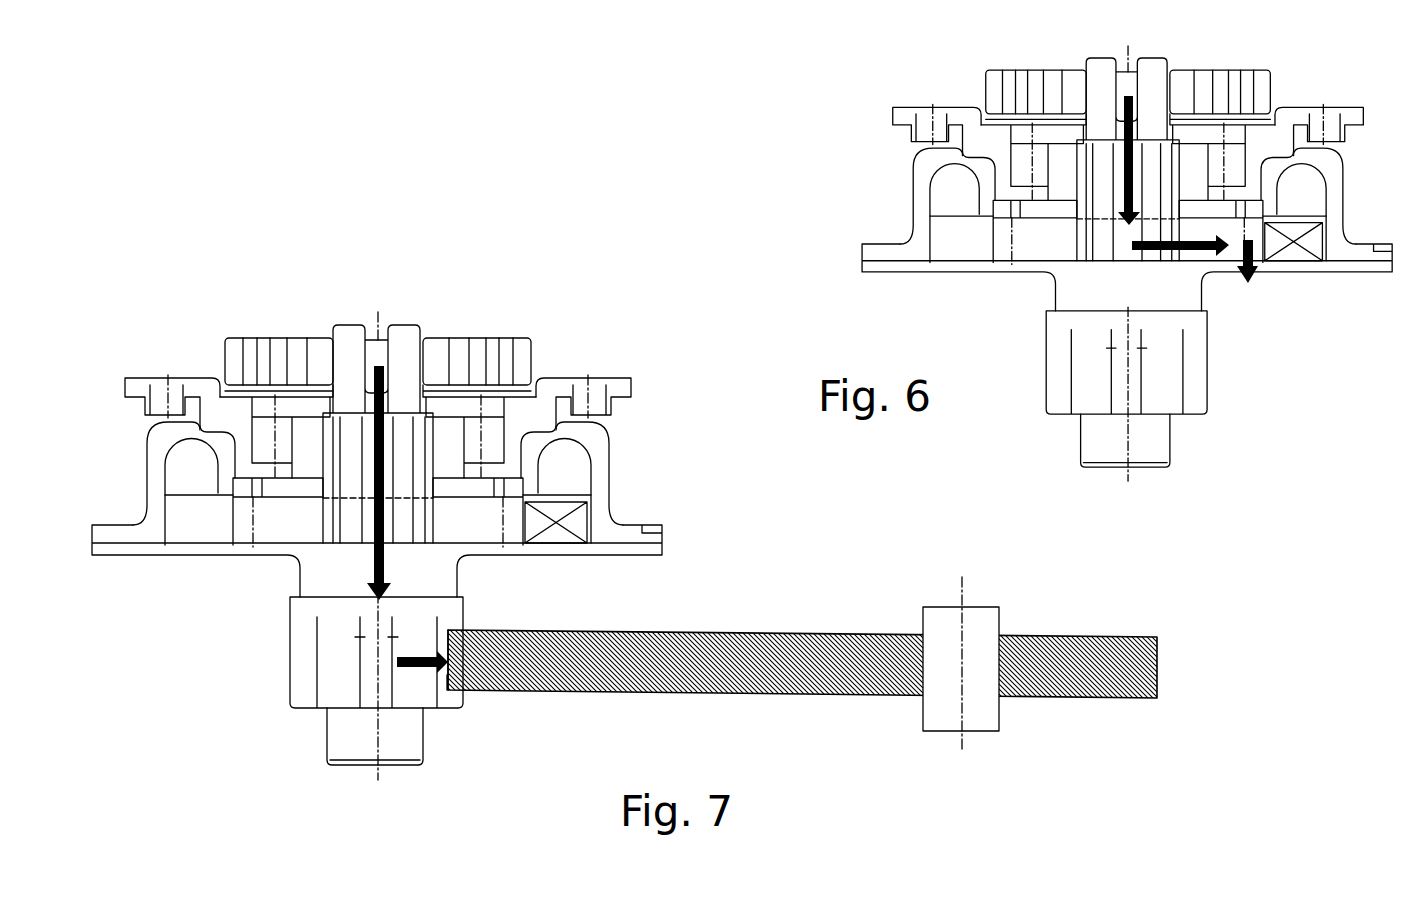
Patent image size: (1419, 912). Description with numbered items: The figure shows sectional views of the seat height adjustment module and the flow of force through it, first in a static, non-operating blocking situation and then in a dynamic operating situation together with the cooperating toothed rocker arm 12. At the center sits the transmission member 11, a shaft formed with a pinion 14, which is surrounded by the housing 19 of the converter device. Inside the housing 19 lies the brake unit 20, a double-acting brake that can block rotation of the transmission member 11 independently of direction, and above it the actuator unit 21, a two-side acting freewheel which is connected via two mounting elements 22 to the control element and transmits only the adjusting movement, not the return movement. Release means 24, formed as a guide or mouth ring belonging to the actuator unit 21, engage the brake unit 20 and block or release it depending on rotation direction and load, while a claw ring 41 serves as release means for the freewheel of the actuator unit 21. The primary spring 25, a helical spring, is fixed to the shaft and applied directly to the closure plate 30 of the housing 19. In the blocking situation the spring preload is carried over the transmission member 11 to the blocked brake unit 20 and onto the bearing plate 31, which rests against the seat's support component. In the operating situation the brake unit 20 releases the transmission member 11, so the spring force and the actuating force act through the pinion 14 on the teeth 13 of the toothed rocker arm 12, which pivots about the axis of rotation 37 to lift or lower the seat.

In FIG. 7, the transmission member 11 is at (340, 770).
In FIG. 6, the transmission member 11 is at (1145, 447).
In FIG. 7, the toothed rocker arm 12 is at (822, 674).
In FIG. 7, the teeth 13 is at (453, 694).
In FIG. 7, the pinion 14 is at (281, 683).
In FIG. 6, the pinion 14 is at (1219, 372).
In FIG. 7, the housing 19 is at (598, 463).
In FIG. 6, the housing 19 is at (922, 180).
In FIG. 7, the brake unit 20 is at (570, 522).
In FIG. 6, the brake unit 20 is at (1304, 244).
In FIG. 7, the actuator unit 21 is at (554, 383).
In FIG. 6, the actuator unit 21 is at (1299, 108).
In FIG. 7, the mounting elements 22 is at (146, 378).
In FIG. 7, the release means 24 is at (463, 490).
In FIG. 6, the release means 24 is at (1207, 250).
In FIG. 7, the primary spring 25 is at (483, 334).
In FIG. 6, the primary spring 25 is at (1244, 70).
In FIG. 7, the closure plate 30 is at (284, 387).
In FIG. 7, the bearing plate 31 is at (228, 556).
In FIG. 6, the bearing plate 31 is at (987, 270).
In FIG. 7, the axis of rotation 37 is at (963, 646).
In FIG. 7, the release means of the actuator unit 41 is at (455, 400).
In FIG. 6, the release means of the actuator unit 41 is at (1037, 133).